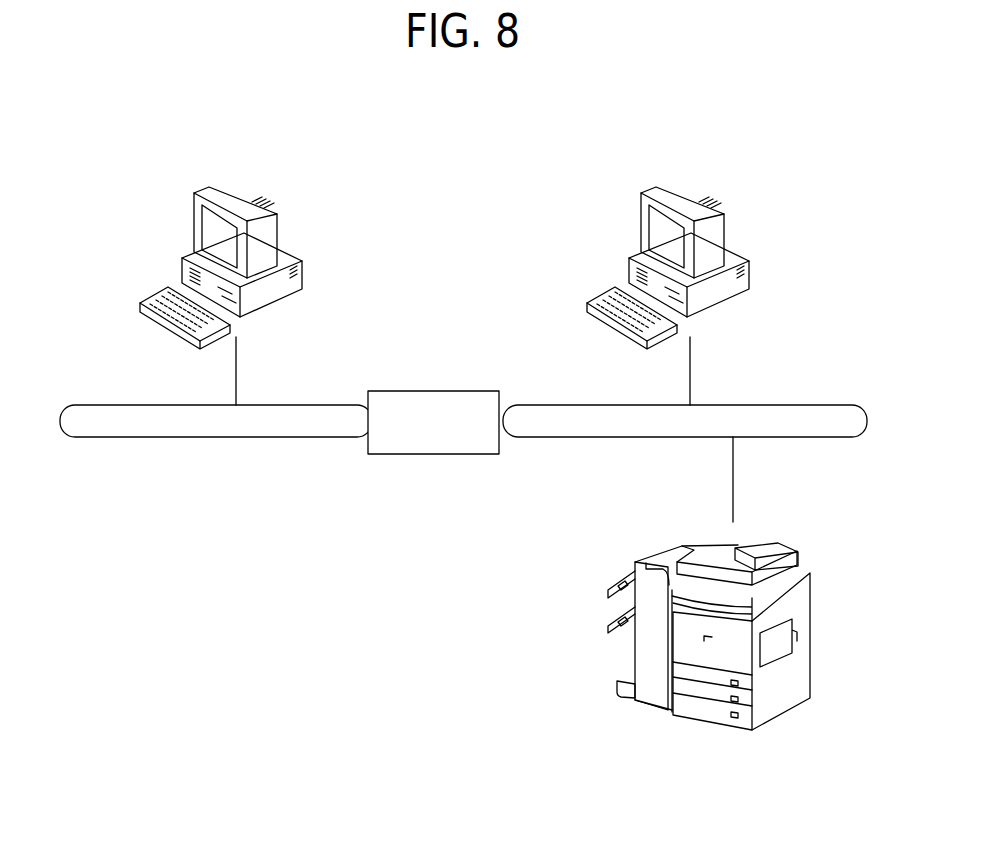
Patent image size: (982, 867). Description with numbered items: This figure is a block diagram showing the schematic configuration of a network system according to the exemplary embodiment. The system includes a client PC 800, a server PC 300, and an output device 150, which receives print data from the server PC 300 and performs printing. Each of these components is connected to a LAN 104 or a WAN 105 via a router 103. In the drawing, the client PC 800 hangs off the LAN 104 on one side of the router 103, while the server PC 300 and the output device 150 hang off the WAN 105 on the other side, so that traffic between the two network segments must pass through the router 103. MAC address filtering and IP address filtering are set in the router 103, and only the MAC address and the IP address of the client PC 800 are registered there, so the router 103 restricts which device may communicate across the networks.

The client PC 800 is at (257, 203).
The server PC 300 is at (692, 193).
The router 103 is at (437, 391).
The LAN 104 is at (260, 438).
The WAN 105 is at (800, 438).
The output device 150 is at (792, 712).